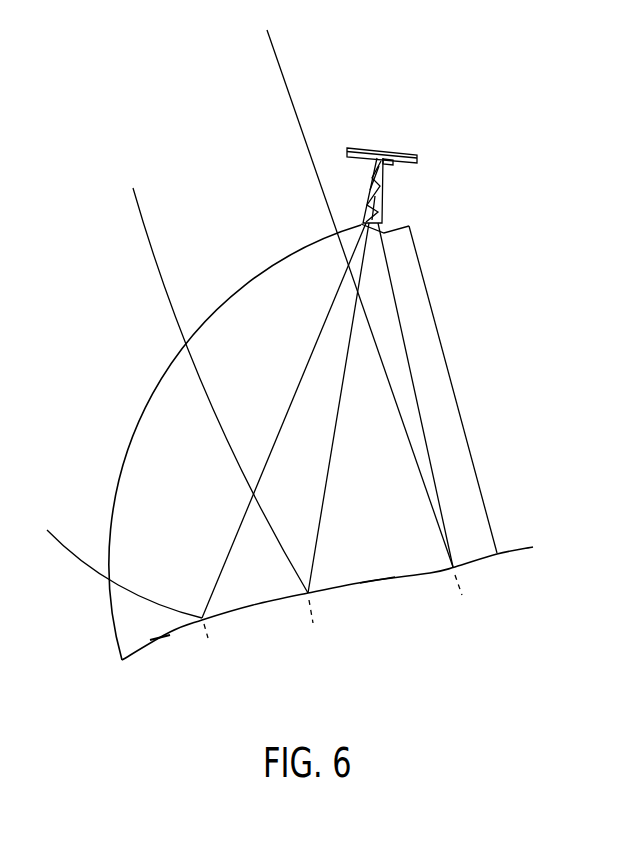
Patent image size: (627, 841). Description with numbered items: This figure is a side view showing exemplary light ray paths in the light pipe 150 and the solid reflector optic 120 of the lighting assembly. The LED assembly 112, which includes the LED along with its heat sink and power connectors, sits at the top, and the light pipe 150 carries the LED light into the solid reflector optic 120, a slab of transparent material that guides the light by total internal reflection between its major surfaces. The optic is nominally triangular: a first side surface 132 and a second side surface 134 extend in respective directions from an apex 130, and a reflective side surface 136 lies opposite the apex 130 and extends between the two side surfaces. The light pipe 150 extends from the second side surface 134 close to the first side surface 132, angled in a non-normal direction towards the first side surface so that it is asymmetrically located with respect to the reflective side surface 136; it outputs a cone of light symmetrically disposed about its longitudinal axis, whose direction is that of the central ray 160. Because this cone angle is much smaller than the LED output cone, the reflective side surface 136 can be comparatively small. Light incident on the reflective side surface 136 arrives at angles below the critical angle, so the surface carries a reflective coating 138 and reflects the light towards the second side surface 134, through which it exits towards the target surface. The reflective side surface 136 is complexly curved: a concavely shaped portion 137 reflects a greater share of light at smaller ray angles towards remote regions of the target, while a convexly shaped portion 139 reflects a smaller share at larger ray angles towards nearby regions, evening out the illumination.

The LED assembly 112 is at (400, 147).
The light pipe 150 is at (380, 210).
The apex 130 is at (409, 228).
The first side surface 132 is at (455, 397).
The second side surface 134 is at (125, 460).
The central ray 160 is at (367, 257).
The solid reflector optic 120 is at (377, 493).
The reflective side surface 136 is at (377, 587).
The concavely shaped portion 137 is at (430, 575).
The reflective coating 138 is at (252, 605).
The convexly shaped portion 139 is at (170, 635).